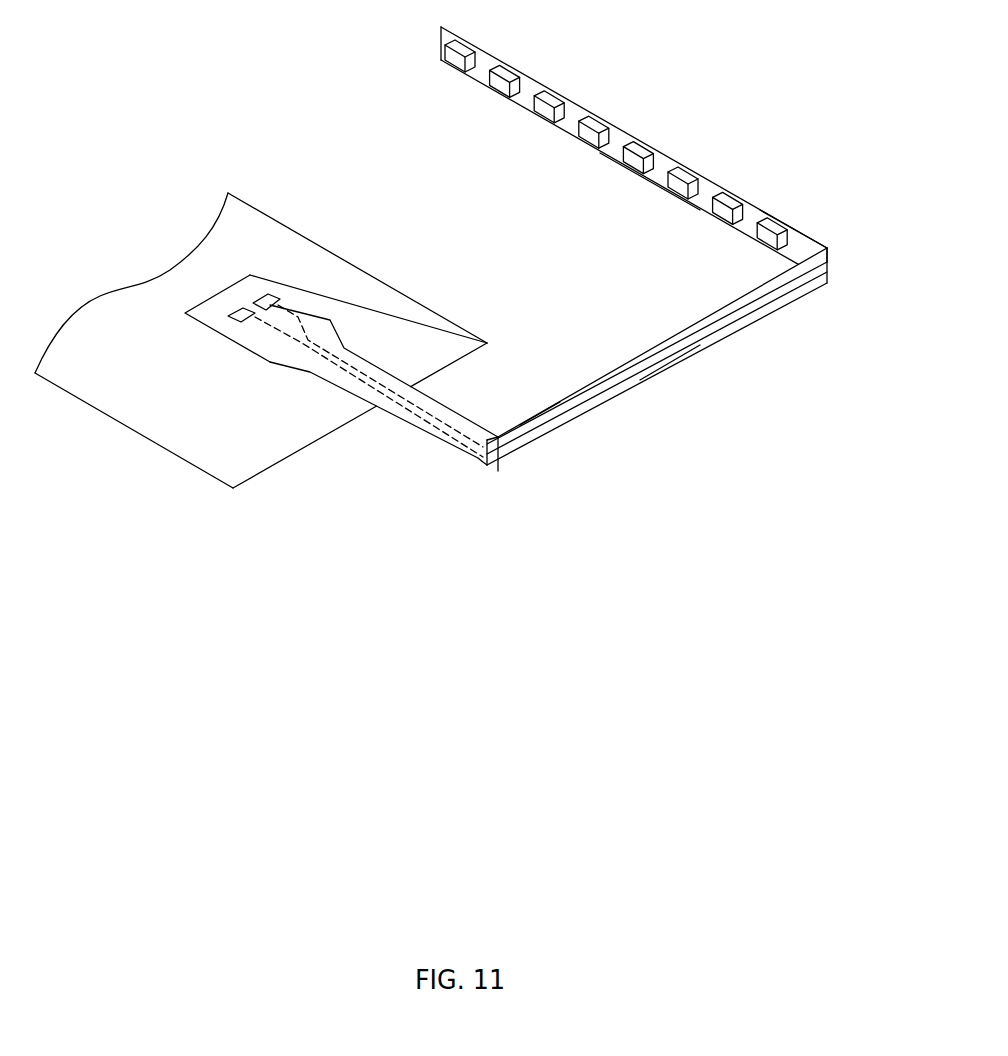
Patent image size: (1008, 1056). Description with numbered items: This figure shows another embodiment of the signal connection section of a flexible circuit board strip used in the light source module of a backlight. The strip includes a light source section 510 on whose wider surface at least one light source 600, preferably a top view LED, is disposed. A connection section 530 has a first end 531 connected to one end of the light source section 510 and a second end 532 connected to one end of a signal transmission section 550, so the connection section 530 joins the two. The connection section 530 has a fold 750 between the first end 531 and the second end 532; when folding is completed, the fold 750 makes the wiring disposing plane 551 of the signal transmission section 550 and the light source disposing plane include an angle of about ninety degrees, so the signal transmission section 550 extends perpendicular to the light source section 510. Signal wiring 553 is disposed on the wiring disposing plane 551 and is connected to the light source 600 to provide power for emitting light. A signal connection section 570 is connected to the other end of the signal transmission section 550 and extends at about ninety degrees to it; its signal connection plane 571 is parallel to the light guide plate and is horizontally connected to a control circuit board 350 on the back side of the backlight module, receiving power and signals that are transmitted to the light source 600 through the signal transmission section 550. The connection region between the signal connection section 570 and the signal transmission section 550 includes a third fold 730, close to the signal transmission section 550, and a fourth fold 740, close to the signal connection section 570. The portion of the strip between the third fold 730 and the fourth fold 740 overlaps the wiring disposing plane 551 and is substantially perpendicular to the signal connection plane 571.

The control circuit board 350 is at (283, 437).
The light source section 510 is at (714, 187).
The connection section 530 is at (827, 266).
The first end 531 is at (807, 233).
The second end 532 is at (774, 314).
The signal transmission section 550 is at (600, 387).
The wiring disposing plane 551 is at (566, 134).
The signal wiring 553 is at (545, 435).
The signal connection section 570 is at (398, 410).
The signal connection plane 571 is at (432, 432).
The light source 600 is at (461, 63).
The third fold 730 is at (478, 464).
The fourth fold 740 is at (488, 440).
The fold 750 is at (827, 253).